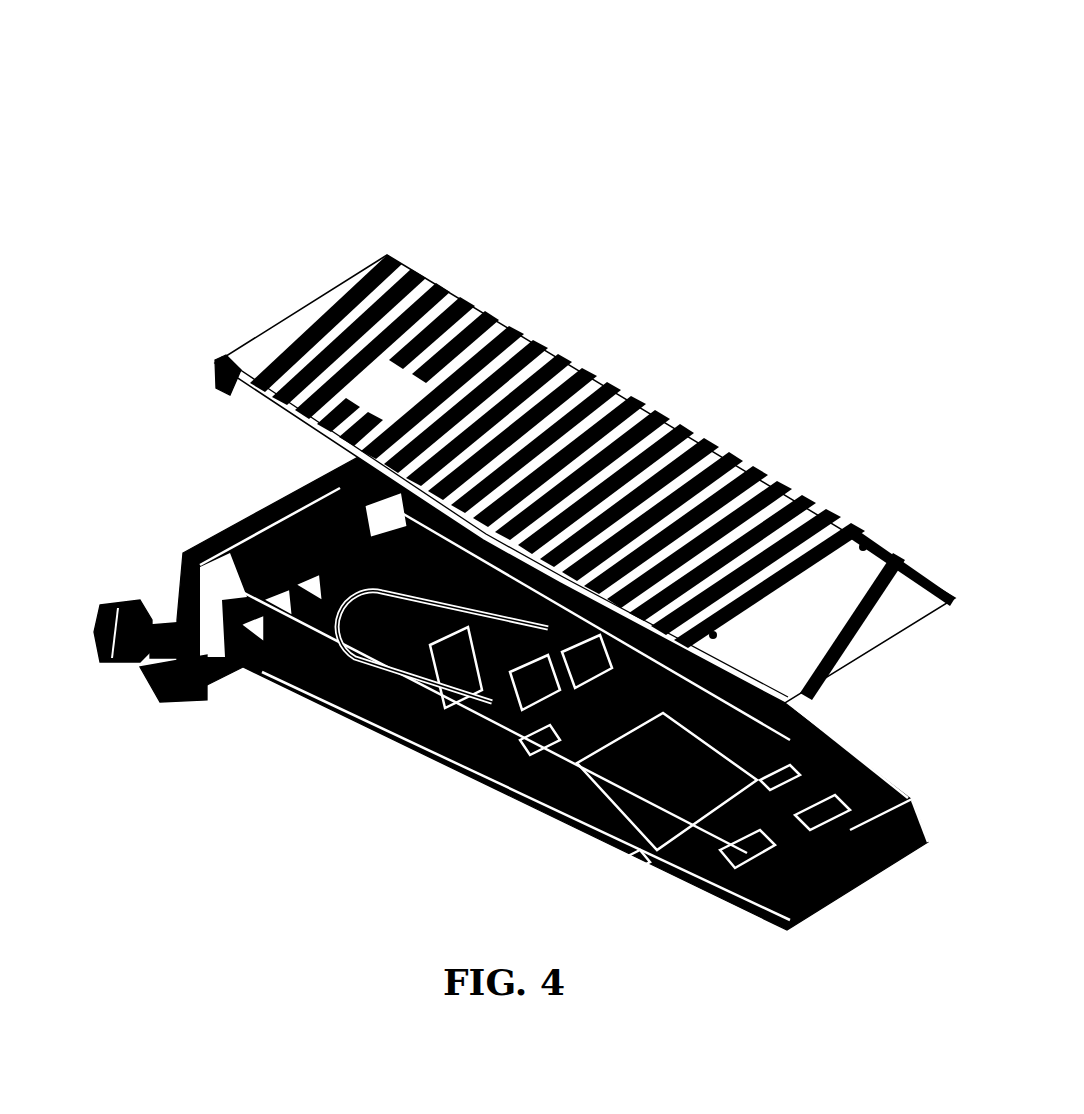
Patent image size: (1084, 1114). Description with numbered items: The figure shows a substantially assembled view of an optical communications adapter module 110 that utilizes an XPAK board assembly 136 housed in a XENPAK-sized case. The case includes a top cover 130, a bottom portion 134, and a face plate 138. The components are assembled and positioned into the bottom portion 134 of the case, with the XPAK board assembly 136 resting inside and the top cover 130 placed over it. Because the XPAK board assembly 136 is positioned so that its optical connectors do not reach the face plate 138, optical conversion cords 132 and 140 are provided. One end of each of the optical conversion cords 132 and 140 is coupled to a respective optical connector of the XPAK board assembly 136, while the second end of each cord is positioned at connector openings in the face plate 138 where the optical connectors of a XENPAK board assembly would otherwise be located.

The optical communications adapter module 110 is at (518, 560).
The top cover 130 is at (662, 400).
The optical conversion cord 132 is at (237, 532).
The bottom portion 134 is at (670, 900).
The XPAK board assembly 136 is at (795, 768).
The face plate 138 is at (285, 487).
The optical conversion cord 140 is at (437, 685).